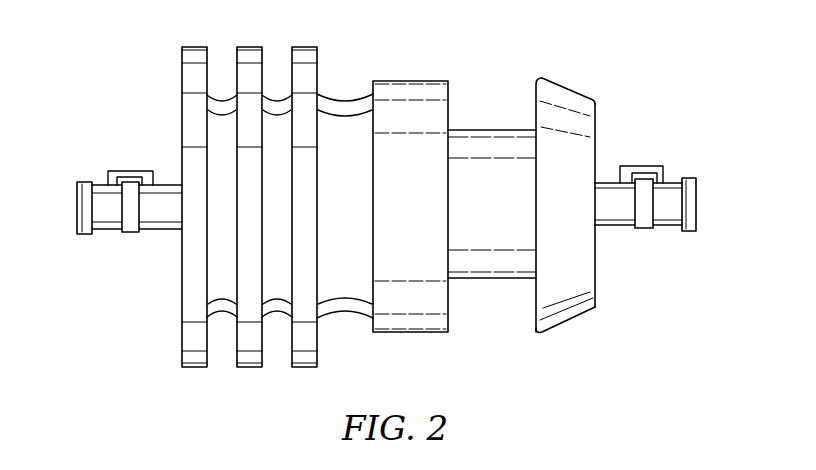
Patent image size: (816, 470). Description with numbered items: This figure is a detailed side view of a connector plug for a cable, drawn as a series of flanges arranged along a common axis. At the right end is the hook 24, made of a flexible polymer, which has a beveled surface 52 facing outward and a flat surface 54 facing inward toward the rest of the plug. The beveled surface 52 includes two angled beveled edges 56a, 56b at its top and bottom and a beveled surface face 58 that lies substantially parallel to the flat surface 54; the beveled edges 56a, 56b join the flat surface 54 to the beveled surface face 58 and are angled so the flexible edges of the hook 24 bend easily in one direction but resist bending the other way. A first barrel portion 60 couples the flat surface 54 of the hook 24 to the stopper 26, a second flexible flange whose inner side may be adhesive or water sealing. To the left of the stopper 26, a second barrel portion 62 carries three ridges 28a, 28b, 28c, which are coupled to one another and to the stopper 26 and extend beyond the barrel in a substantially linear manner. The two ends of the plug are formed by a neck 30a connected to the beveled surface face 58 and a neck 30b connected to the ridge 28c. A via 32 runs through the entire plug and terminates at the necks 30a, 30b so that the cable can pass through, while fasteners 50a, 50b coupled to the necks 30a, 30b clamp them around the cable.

The hook 24 is at (570, 190).
The stopper 26 is at (410, 333).
The ridge 28a is at (301, 47).
The ridge 28b is at (250, 47).
The ridge 28c is at (198, 47).
The neck 30a is at (616, 226).
The neck 30b is at (161, 229).
The via 32 is at (76, 208).
The fastener 50a is at (647, 166).
The fastener 50b is at (128, 171).
The beveled surface 52 is at (597, 106).
The flat surface 54 is at (536, 105).
The beveled edge 56a is at (553, 85).
The beveled edge 56b is at (571, 320).
The beveled surface face 58 is at (597, 280).
The first barrel portion 60 is at (481, 279).
The second barrel portion 62 is at (338, 313).